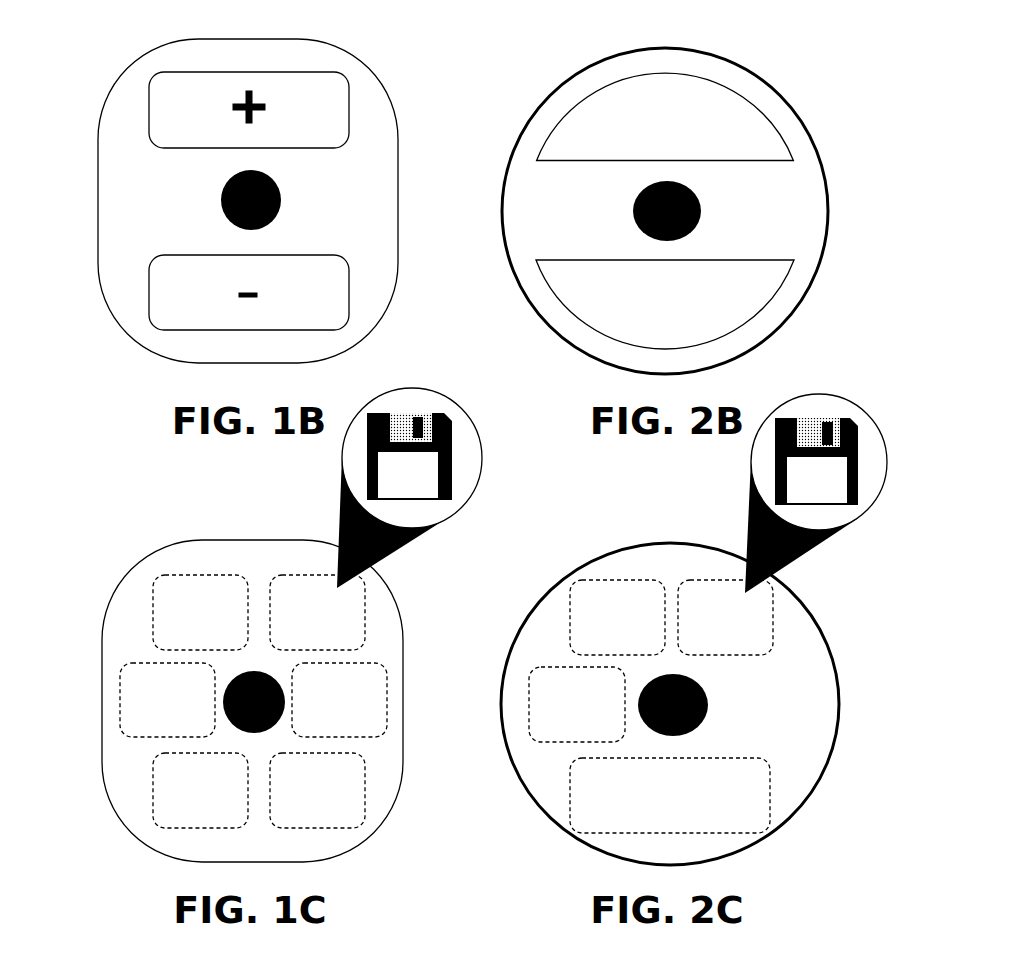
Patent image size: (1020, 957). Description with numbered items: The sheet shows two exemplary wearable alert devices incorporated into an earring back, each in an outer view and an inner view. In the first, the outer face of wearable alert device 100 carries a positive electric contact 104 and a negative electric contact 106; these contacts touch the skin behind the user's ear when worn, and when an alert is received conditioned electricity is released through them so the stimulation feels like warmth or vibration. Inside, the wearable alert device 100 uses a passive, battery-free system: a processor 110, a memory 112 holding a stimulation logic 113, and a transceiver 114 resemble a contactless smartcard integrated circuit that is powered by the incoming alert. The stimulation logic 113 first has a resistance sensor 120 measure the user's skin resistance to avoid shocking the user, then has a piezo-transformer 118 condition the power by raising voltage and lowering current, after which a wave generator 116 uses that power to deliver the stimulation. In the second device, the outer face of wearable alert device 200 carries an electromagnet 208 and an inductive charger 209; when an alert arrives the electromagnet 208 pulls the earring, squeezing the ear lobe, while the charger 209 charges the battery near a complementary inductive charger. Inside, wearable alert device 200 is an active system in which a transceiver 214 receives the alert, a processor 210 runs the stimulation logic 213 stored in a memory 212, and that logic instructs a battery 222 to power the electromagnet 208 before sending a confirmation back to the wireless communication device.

In FIG. 1B, the wearable alert device 100 is at (248, 181).
In FIG. 1B, the positive electric contact 104 is at (196, 96).
In FIG. 1B, the negative electric contact 106 is at (196, 306).
In FIG. 1C, the processor 110 is at (156, 590).
In FIG. 1C, the memory 112 is at (261, 571).
In FIG. 1C, the stimulation logic 113 is at (446, 488).
In FIG. 1C, the transceiver 114 is at (116, 685).
In FIG. 1C, the wave generator 116 is at (148, 800).
In FIG. 1C, the piezo-transformer 118 is at (386, 676).
In FIG. 1C, the resistance sensor 120 is at (356, 813).
In FIG. 2B, the wearable alert device 200 is at (667, 196).
In FIG. 2B, the electromagnet 208 is at (645, 100).
In FIG. 2B, the inductive charger 209 is at (645, 320).
In FIG. 2C, the processor 210 is at (580, 594).
In FIG. 2C, the memory 212 is at (746, 640).
In FIG. 2C, the stimulation logic 213 is at (771, 493).
In FIG. 2C, the transceiver 214 is at (523, 718).
In FIG. 2C, the battery 222 is at (641, 818).